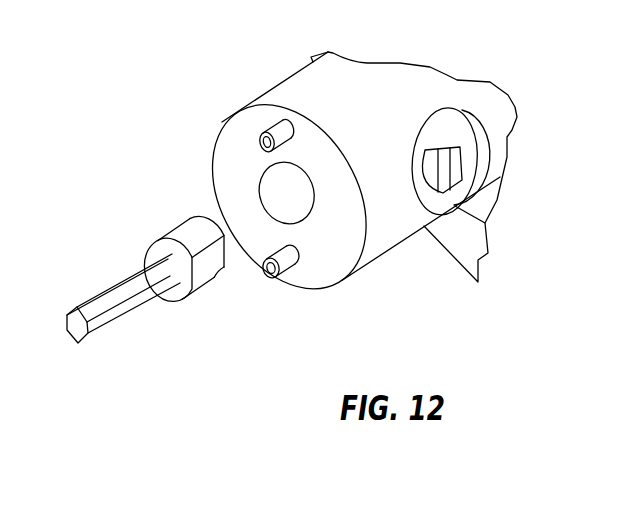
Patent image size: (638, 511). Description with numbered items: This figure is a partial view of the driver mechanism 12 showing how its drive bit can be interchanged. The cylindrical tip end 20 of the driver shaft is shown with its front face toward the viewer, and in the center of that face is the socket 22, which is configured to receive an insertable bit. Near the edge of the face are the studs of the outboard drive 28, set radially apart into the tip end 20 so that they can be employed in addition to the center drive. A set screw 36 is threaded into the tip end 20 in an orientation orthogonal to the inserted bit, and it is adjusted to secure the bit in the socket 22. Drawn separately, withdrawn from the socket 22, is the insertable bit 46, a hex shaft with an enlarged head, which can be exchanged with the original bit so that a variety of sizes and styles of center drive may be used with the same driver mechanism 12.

The driver mechanism 12 is at (432, 283).
The tip end 20 is at (290, 78).
The socket 22 is at (300, 200).
The outboard drive 28 is at (258, 142).
The set screw 36 is at (462, 168).
The insertable bit 46 is at (115, 278).